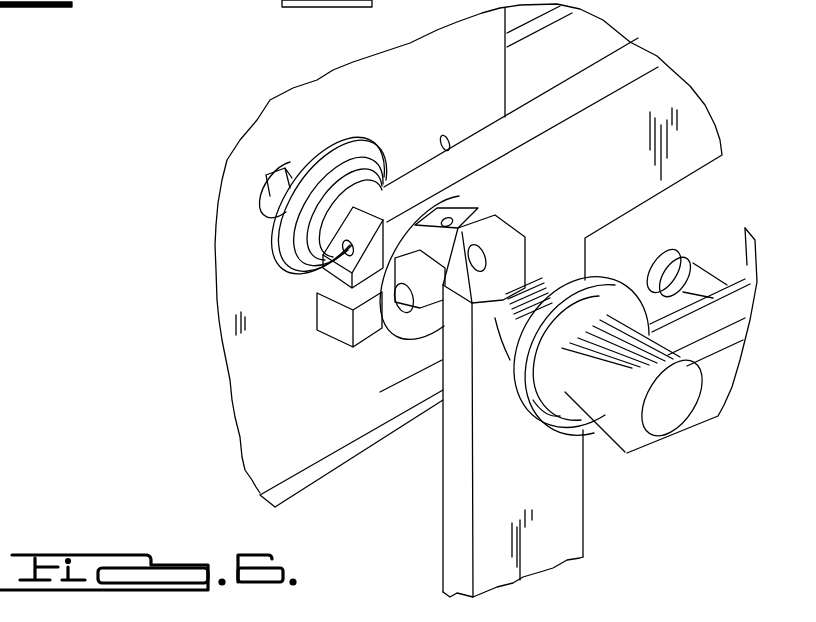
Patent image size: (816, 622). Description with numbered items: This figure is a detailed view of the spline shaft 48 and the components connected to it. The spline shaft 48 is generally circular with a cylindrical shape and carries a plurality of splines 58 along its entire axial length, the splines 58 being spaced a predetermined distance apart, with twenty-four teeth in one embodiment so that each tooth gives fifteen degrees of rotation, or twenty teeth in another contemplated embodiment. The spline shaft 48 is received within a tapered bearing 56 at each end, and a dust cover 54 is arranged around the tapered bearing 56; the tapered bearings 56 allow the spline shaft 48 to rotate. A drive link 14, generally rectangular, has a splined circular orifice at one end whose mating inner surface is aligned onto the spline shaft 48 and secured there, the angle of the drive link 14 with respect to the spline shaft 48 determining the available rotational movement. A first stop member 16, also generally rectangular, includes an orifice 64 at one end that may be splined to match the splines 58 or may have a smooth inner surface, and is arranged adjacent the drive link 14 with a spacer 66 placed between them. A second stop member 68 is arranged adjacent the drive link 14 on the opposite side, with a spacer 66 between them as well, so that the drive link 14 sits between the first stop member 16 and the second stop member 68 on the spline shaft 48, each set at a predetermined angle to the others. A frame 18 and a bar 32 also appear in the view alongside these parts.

The drive link 14 is at (425, 340).
The first stop member 16 is at (498, 497).
The frame 18 is at (226, 0).
The bar 32 is at (128, 0).
The spline shaft 48 is at (667, 418).
The dust cover 54 is at (550, 400).
The tapered bearing 56 is at (392, 155).
The splines 58 is at (547, 282).
The orifice 64 is at (513, 357).
The spacer 66 is at (443, 360).
The second stop member 68 is at (613, 107).